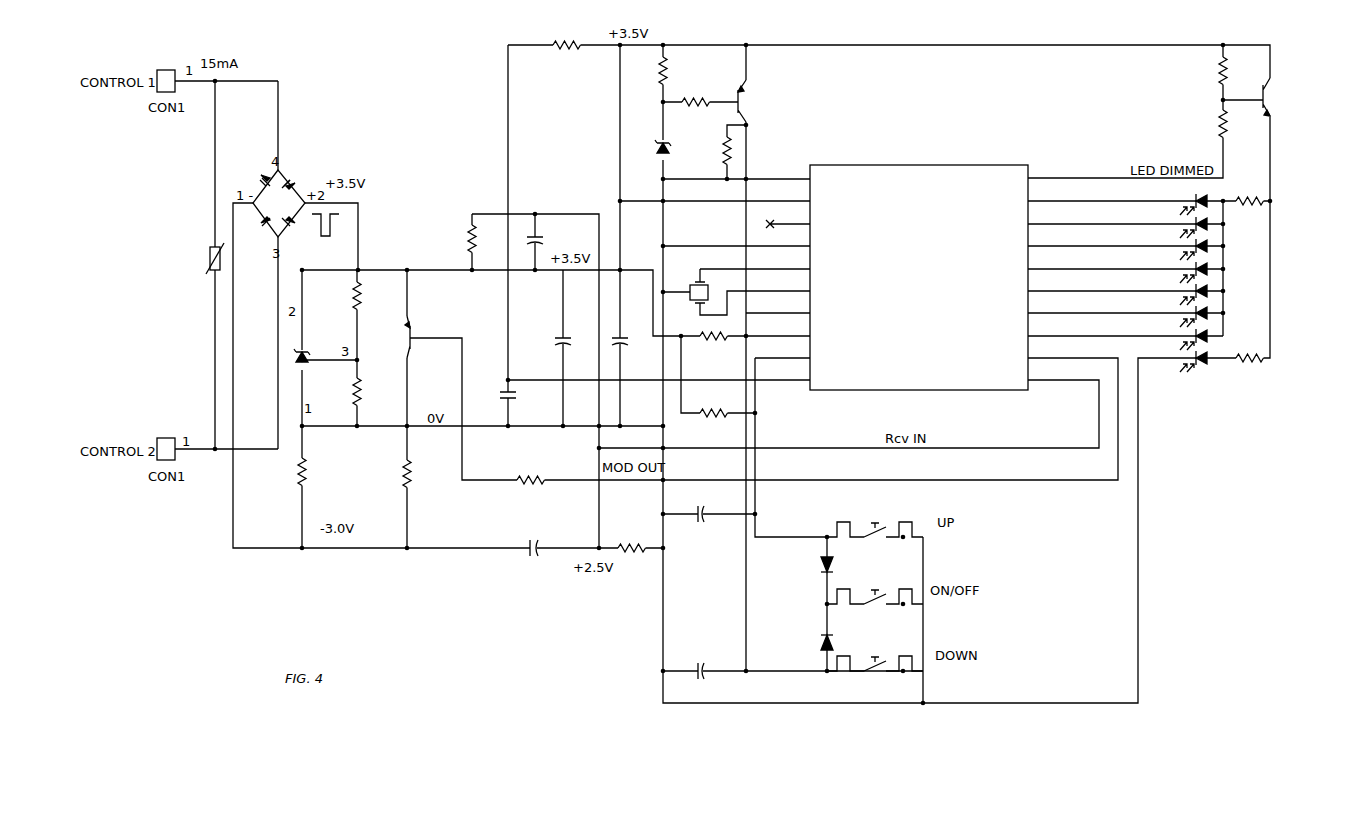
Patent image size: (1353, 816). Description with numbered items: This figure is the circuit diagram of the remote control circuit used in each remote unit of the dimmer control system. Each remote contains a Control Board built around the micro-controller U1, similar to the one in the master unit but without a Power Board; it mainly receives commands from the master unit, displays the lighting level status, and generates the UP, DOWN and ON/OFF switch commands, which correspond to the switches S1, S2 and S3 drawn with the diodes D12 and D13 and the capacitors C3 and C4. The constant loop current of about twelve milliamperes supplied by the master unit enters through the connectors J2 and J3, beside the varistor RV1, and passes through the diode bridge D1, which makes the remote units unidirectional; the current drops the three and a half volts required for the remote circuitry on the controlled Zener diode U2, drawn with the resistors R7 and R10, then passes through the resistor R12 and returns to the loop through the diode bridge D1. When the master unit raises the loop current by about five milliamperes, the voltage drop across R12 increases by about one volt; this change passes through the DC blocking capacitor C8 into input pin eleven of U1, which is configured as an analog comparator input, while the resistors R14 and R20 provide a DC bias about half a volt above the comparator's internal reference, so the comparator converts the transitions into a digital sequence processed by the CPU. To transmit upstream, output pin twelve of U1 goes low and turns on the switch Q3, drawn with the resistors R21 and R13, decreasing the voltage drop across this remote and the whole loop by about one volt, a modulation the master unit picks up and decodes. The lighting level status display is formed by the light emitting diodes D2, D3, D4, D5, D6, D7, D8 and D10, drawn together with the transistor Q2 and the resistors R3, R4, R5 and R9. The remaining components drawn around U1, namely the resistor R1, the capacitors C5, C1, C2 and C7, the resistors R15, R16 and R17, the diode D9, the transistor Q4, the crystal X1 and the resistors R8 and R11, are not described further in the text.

The connector CON1 control 1 J2 is at (166, 74).
The connector CON1 control 2 J3 is at (166, 442).
The varistor MOV 36V RV1 is at (187, 260).
The diode bridge D1 is at (297, 188).
The controlled Zener diode U2 is at (325, 339).
The resistor 12k R7 is at (369, 305).
The resistor 30k R10 is at (344, 396).
The resistor R12 is at (329, 477).
The switch Q3 is at (441, 333).
The resistor 825 1% R21 is at (431, 474).
The resistor 10k R13 is at (537, 472).
The resistor R20 is at (486, 243).
The capacitor 270pF C5 is at (558, 232).
The capacitor 10uF 10V C1 is at (577, 353).
The capacitor 0.1uF C2 is at (637, 357).
The capacitor 0.01uF C7 is at (530, 408).
The DC blocking capacitor C8 is at (531, 554).
The resistor R14 is at (633, 553).
The resistor 10K R1 is at (569, 49).
The resistor 2.4K R15 is at (679, 69).
The resistor 6.8K R16 is at (697, 105).
The resistor 10K R17 is at (721, 146).
The zener diode MA8024 D9 is at (686, 155).
The transistor MMBT4403 Q4 is at (773, 96).
The crystal 4MHz X1 is at (712, 290).
The resistor 10k R8 is at (715, 339).
The resistor 10k R11 is at (715, 416).
The micro-controller U1 is at (924, 282).
The green LED D2 is at (1149, 200).
The green LED D3 is at (1149, 223).
The green LED D4 is at (1149, 245).
The green LED D5 is at (1149, 268).
The green LED D6 is at (1149, 290).
The green LED D7 is at (1149, 312).
The green LED D8 is at (1149, 335).
The yellow LED D10 is at (1147, 357).
The transistor MMBT2222A Q2 is at (1301, 99).
The resistor 2k R3 is at (1233, 73).
The resistor 7.5k R4 is at (1239, 127).
The resistor 270 R5 is at (1250, 203).
The resistor 270 R9 is at (1250, 360).
The capacitor 0.1uF C3 is at (703, 516).
The capacitor C4 is at (703, 675).
The diode 1N4148 D12 is at (802, 570).
The diode 1N4148 D13 is at (802, 645).
The switch UP S1 is at (875, 519).
The switch ON/OFF S2 is at (875, 591).
The switch DOWN S3 is at (875, 660).